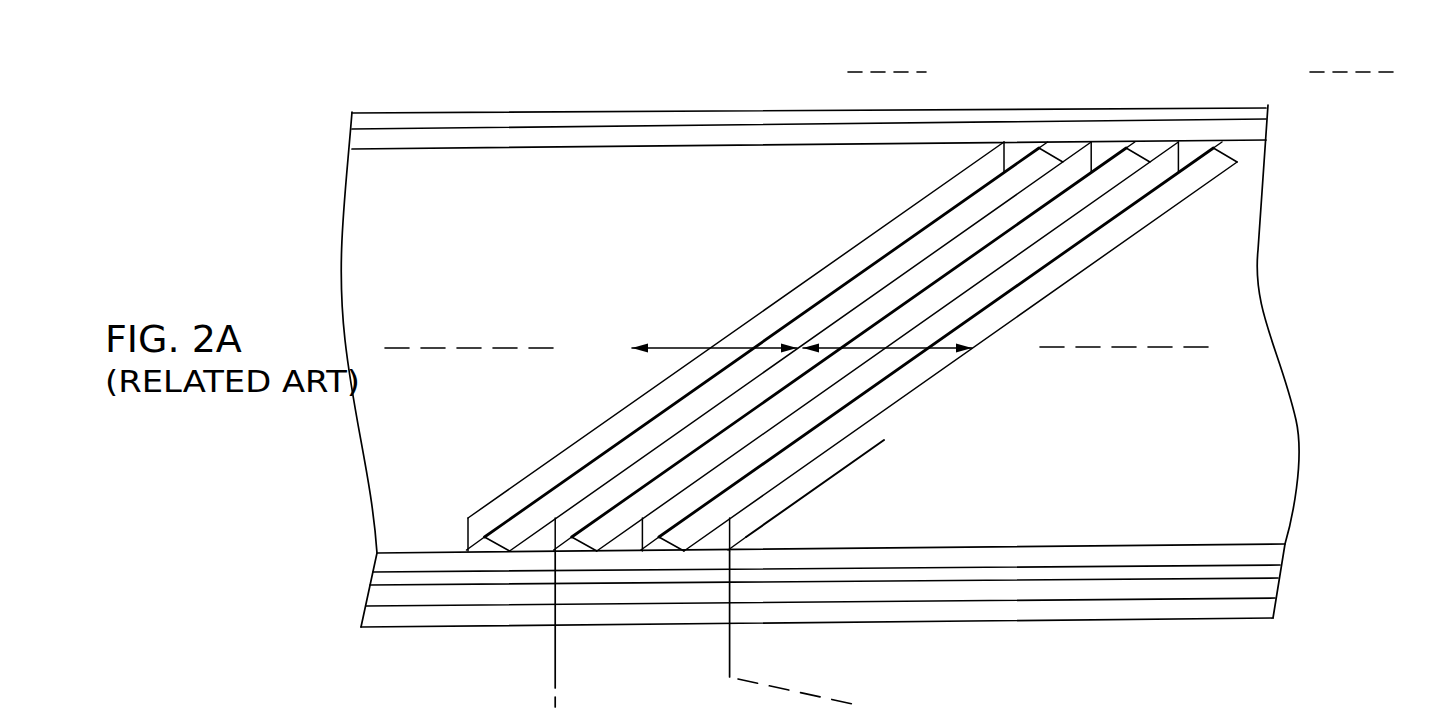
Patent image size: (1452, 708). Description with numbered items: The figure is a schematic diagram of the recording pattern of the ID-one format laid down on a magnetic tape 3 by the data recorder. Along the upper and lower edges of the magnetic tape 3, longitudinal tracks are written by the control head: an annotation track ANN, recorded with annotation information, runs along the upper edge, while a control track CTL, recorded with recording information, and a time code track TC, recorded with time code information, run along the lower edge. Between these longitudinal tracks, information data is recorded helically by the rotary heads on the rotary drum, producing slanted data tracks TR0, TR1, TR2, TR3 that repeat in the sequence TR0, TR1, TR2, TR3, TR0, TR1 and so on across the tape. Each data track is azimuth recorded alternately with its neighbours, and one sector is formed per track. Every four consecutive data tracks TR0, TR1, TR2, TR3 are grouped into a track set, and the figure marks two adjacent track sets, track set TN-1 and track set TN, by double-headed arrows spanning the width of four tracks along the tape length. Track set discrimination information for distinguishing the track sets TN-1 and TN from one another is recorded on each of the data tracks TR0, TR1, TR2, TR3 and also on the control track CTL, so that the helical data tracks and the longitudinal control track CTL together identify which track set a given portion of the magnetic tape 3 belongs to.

The magnetic tape 3 is at (562, 39).
The annotation track ANN is at (783, 137).
The data track TR0 is at (1088, 160).
The data track TR1 is at (1138, 160).
The data track TR2 is at (975, 160).
The data track TR3 is at (1035, 160).
The control track CTL is at (1008, 558).
The time code track TC is at (1003, 592).
The track set T(N-1) TN-1 is at (690, 346).
The track set TN is at (913, 356).